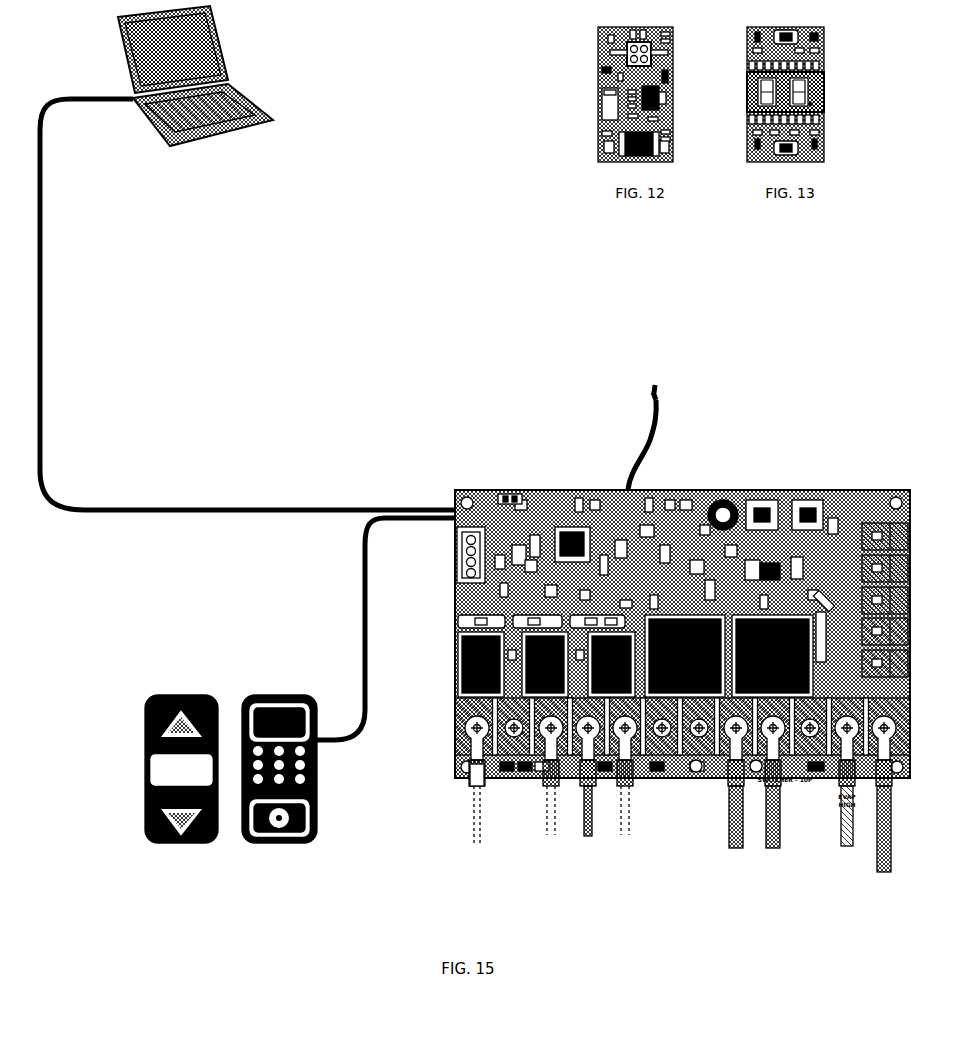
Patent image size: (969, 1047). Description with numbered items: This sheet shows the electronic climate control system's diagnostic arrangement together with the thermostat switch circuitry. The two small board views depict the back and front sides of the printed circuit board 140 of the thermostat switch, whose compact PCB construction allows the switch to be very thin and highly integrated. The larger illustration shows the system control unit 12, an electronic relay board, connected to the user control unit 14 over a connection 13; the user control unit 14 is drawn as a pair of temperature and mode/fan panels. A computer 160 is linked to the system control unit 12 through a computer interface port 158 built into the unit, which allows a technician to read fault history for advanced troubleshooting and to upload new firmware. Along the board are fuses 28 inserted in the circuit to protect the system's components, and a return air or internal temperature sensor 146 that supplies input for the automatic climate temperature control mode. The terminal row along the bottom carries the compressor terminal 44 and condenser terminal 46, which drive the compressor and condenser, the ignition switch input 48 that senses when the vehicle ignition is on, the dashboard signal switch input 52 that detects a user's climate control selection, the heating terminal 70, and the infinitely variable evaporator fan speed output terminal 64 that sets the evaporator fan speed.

In FIG. 15, the system control unit 12 is at (828, 488).
In FIG. 15, the connection 13 is at (360, 586).
In FIG. 15, the user control unit 14 is at (209, 666).
In FIG. 15, the fuses 28 is at (457, 618).
In FIG. 15, the compressor terminal 44 is at (477, 848).
In FIG. 15, the condenser terminal 46 is at (776, 852).
In FIG. 15, the ignition switch input 48 is at (588, 838).
In FIG. 15, the dashboard signal switch input 52 is at (625, 838).
In FIG. 15, the infinitely variable evaporator fan speed output terminal 64 is at (885, 875).
In FIG. 15, the heating terminal 70 is at (551, 838).
In FIG. 12, the printed circuit board of the thermostat switch 140 is at (592, 54).
In FIG. 13, the printed circuit board of the thermostat switch 140 is at (827, 97).
In FIG. 15, the internal temperature sensor 146 is at (660, 422).
In FIG. 15, the computer interface port 158 is at (505, 498).
In FIG. 15, the computer 160 is at (218, 42).